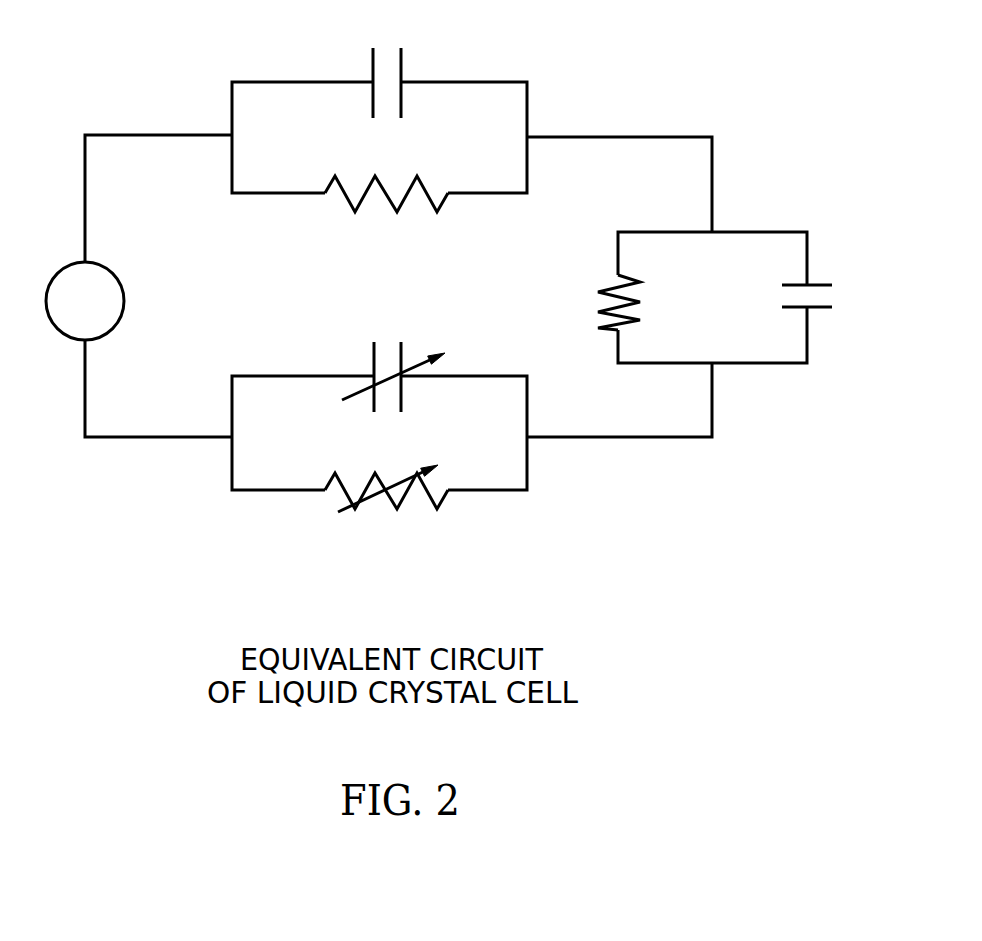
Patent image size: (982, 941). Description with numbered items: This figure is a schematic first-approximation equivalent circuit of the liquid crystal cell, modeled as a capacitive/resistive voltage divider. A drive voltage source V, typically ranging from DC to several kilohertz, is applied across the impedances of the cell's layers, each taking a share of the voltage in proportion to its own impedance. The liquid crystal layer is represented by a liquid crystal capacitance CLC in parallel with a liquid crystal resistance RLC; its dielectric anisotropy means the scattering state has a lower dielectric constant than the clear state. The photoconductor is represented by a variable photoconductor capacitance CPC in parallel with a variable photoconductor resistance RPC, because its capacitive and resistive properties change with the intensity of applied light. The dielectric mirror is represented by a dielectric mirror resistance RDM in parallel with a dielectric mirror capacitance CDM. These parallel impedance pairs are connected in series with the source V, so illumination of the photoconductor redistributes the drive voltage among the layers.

The voltage source V is at (85, 301).
The liquid crystal capacitance CLC is at (411, 64).
The liquid crystal resistance RLC is at (386, 217).
The variable capacitance of photoconductor layer CPC is at (408, 364).
The variable resistance of photoconductor layer RPC is at (391, 510).
The dielectric mirror resistance RDM is at (591, 302).
The dielectric mirror capacitance CDM is at (829, 317).